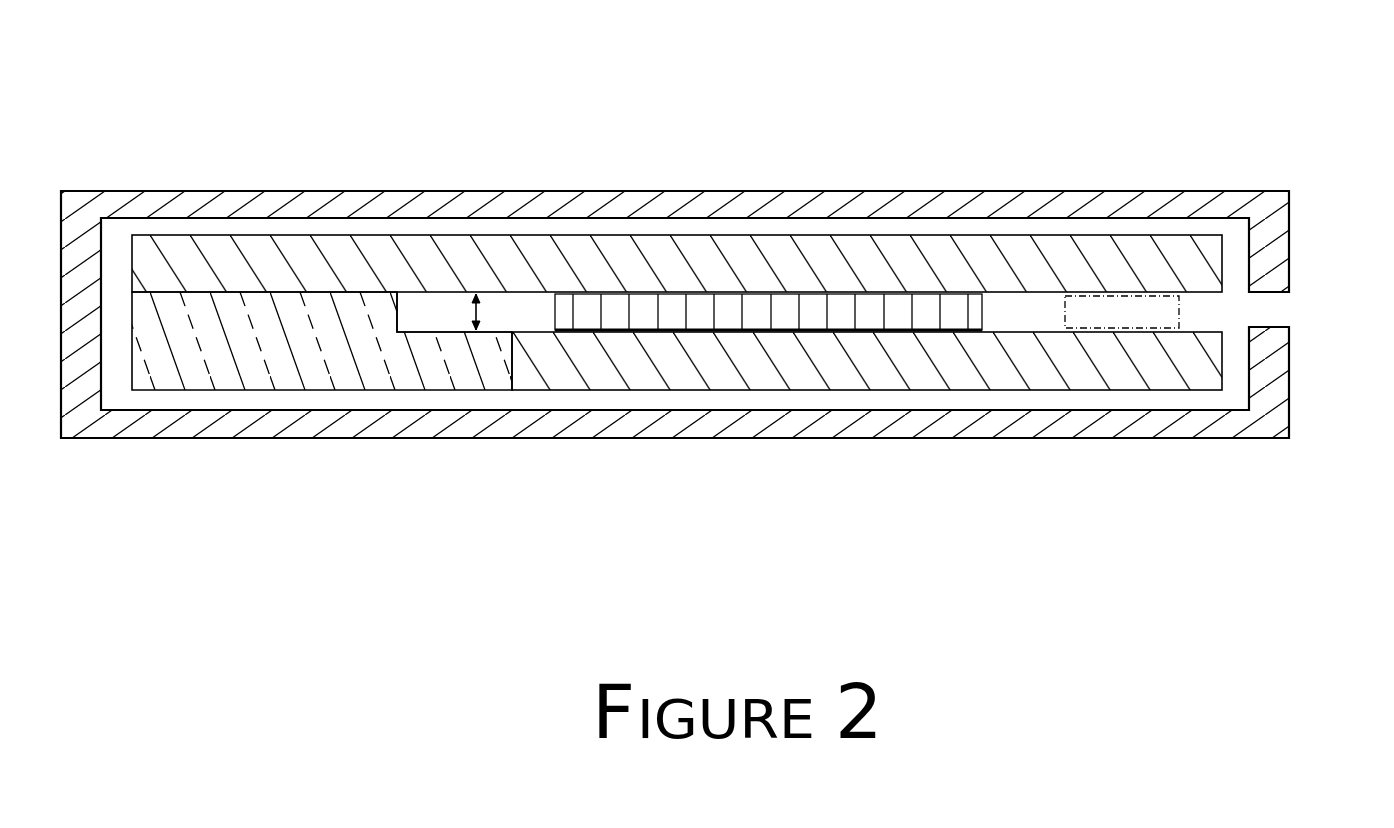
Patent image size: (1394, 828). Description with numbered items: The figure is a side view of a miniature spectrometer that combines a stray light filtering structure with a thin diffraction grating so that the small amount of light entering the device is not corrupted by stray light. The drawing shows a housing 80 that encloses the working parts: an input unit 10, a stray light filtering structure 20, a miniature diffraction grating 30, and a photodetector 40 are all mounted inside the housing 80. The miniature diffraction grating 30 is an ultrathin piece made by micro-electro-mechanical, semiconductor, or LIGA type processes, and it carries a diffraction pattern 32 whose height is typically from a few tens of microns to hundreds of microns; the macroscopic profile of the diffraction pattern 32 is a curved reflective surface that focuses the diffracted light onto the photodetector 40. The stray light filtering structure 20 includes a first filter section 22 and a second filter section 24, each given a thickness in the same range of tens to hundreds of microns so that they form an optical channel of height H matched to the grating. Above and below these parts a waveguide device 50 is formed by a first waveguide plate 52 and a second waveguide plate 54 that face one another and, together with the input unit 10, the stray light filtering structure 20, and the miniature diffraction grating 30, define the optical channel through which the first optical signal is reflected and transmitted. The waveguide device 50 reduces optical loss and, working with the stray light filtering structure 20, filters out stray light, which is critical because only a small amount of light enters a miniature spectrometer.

The input unit 10 is at (1276, 302).
The stray light filtering structure 20 is at (895, 300).
The first filter section 22 is at (768, 312).
The second filter section 24 is at (768, 312).
The miniature diffraction grating 30 is at (251, 377).
The diffraction pattern 32 is at (398, 312).
The photodetector 40 is at (1124, 300).
The waveguide device 50 is at (107, 118).
The first waveguide plate 52 is at (624, 248).
The second waveguide plate 54 is at (1022, 380).
The housing 80 is at (397, 200).